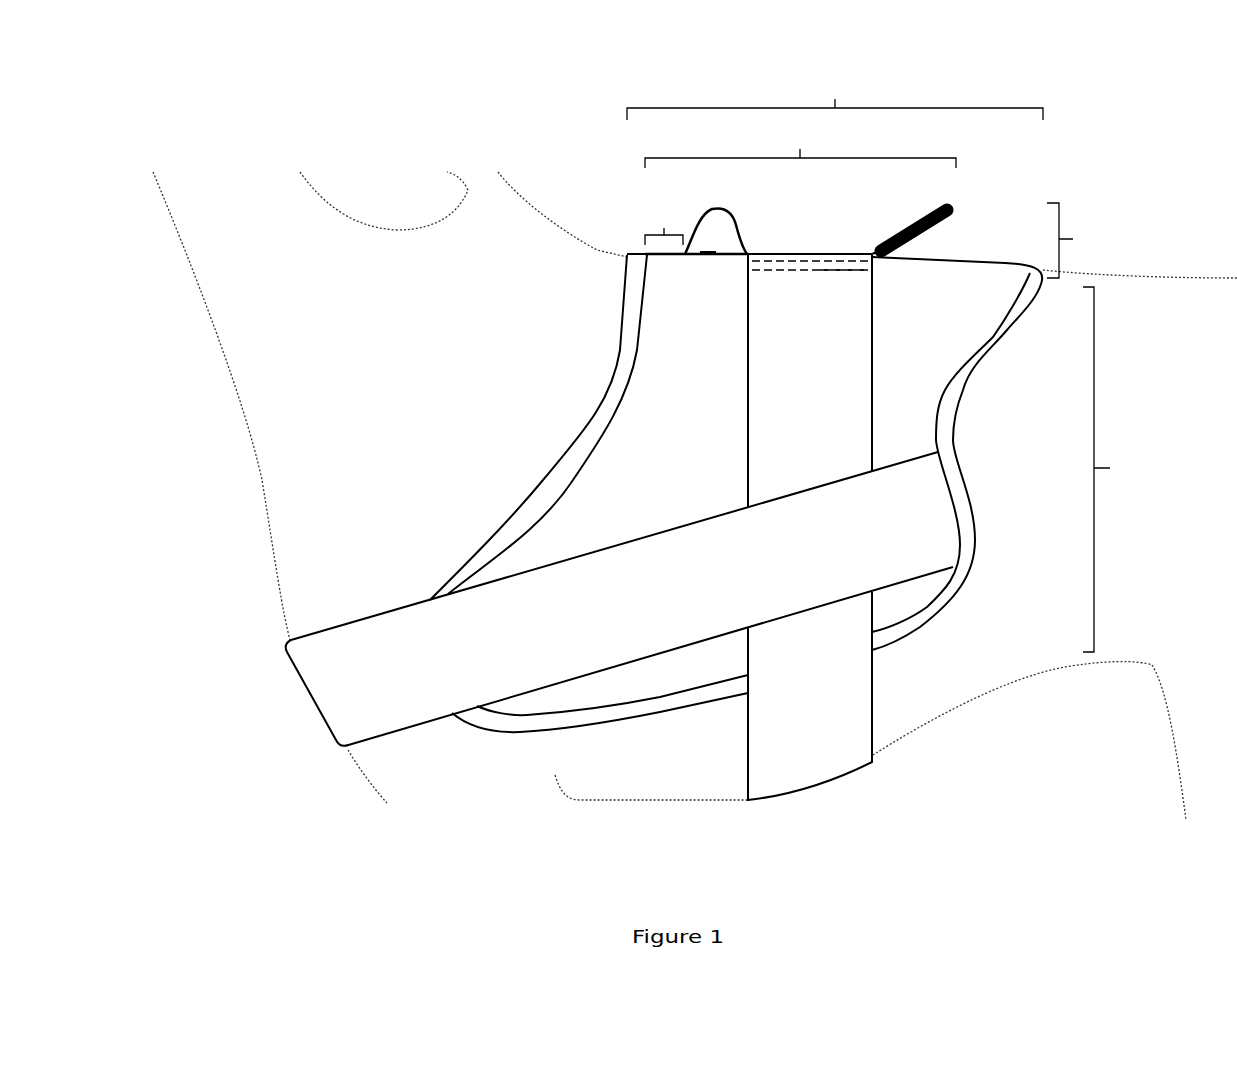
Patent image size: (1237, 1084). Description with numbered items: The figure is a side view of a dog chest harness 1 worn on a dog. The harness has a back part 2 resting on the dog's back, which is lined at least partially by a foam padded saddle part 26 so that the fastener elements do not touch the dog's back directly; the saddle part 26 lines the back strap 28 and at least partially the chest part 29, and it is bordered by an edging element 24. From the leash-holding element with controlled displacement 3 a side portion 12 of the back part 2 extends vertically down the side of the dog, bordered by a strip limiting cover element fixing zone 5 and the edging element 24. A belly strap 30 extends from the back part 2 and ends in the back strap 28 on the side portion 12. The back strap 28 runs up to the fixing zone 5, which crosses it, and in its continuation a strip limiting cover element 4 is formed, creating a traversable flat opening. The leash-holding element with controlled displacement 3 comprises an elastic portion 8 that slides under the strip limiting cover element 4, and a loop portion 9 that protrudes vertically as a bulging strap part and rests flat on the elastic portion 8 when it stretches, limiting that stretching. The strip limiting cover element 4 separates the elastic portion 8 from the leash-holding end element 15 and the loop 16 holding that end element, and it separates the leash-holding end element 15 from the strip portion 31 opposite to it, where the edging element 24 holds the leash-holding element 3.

The dog harness 1 is at (1108, 133).
The back part 2 is at (835, 97).
The leash-holding element with controlled displacement 3 is at (870, 201).
The strip limiting cover element 4 is at (799, 252).
The strip limiting cover element fixing zone 5 is at (847, 273).
The elastic portion 8 is at (708, 247).
The loop portion limiting the stretching of the elastic portion 9 is at (733, 215).
The side portion 12 is at (1114, 469).
The leash-holding end element 15 is at (960, 207).
The loop holding the leash-holding end element 16 is at (877, 242).
The edging element 24 is at (627, 358).
The saddle part 26 is at (932, 362).
The back strap 28 is at (792, 400).
The chest part 29 is at (327, 675).
The belly strap 30 is at (777, 775).
The strip portion opposite to the leash-holding end element 31 is at (664, 225).